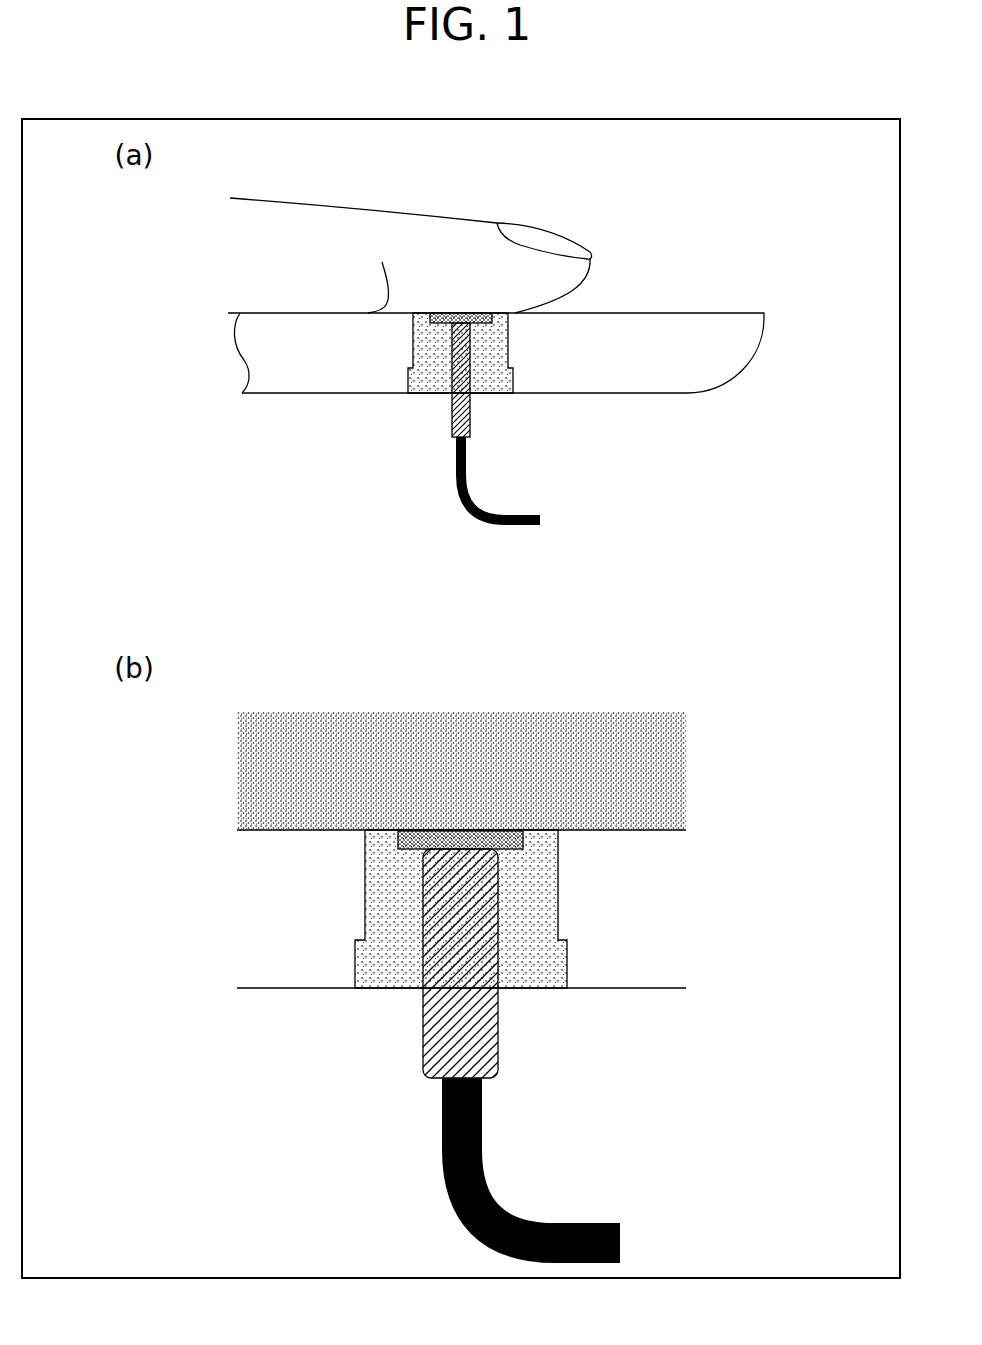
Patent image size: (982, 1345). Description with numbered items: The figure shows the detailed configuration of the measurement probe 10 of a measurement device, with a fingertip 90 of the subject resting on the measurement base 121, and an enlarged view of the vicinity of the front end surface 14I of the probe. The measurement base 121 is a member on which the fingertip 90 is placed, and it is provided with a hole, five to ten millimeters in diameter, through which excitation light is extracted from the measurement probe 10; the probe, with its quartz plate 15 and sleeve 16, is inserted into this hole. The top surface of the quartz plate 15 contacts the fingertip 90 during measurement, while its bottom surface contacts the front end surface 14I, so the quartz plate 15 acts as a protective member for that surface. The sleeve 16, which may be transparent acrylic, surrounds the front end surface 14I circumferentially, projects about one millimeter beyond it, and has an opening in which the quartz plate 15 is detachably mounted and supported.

The measurement probe 10 is at (454, 702).
The front end surface 14I is at (463, 323).
The quartz plate 15 is at (493, 318).
The sleeve 16 is at (490, 383).
The fingertip 90 is at (391, 210).
The measurement base 121 is at (670, 313).